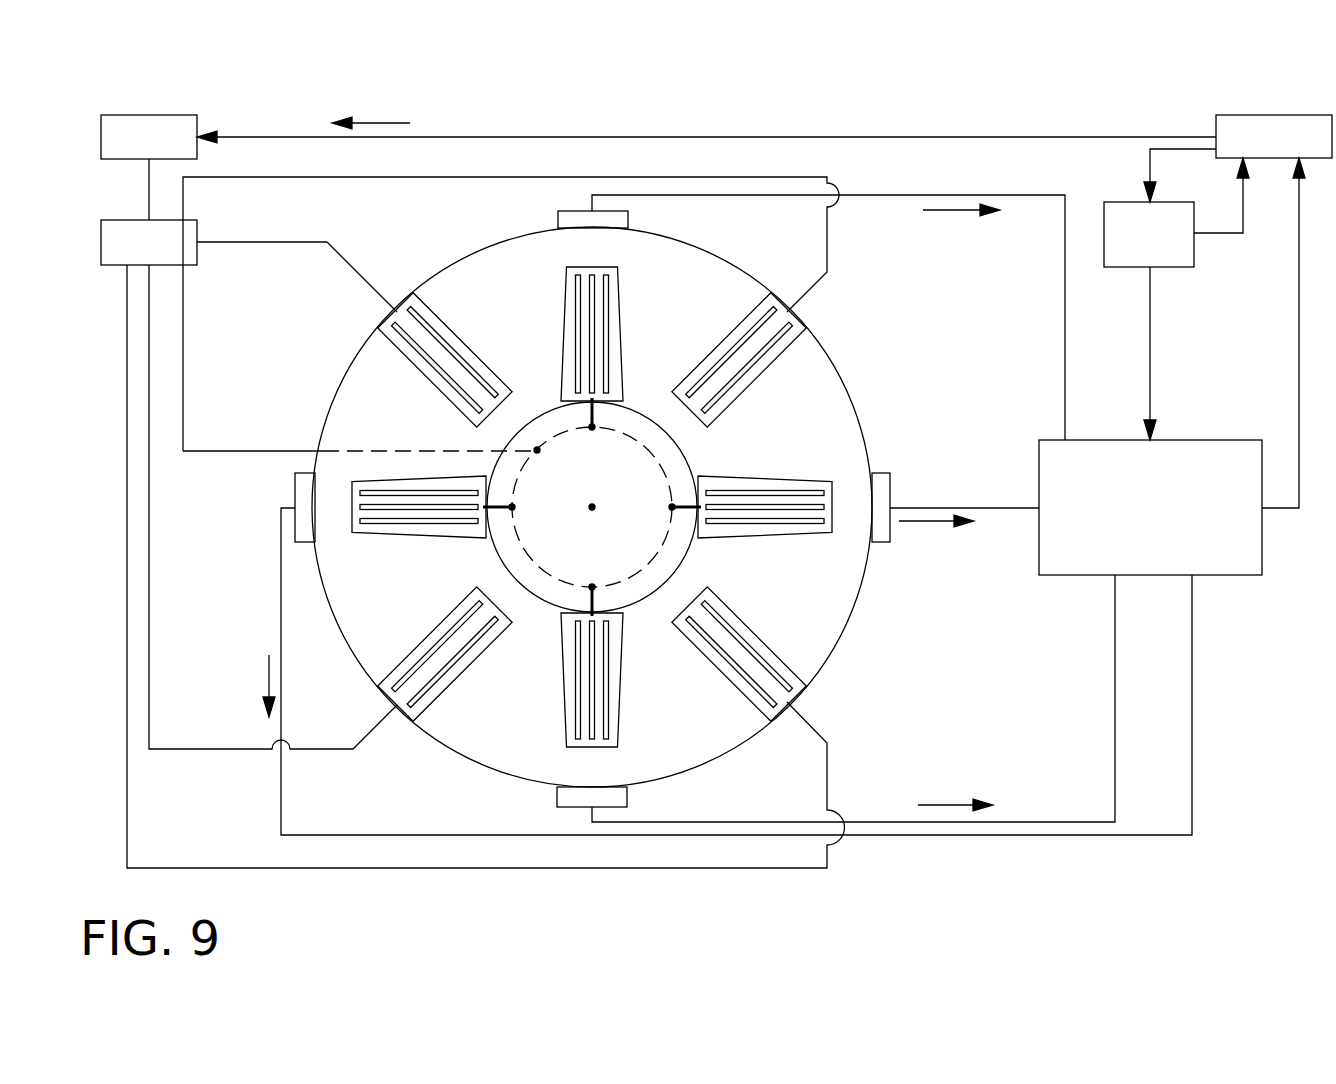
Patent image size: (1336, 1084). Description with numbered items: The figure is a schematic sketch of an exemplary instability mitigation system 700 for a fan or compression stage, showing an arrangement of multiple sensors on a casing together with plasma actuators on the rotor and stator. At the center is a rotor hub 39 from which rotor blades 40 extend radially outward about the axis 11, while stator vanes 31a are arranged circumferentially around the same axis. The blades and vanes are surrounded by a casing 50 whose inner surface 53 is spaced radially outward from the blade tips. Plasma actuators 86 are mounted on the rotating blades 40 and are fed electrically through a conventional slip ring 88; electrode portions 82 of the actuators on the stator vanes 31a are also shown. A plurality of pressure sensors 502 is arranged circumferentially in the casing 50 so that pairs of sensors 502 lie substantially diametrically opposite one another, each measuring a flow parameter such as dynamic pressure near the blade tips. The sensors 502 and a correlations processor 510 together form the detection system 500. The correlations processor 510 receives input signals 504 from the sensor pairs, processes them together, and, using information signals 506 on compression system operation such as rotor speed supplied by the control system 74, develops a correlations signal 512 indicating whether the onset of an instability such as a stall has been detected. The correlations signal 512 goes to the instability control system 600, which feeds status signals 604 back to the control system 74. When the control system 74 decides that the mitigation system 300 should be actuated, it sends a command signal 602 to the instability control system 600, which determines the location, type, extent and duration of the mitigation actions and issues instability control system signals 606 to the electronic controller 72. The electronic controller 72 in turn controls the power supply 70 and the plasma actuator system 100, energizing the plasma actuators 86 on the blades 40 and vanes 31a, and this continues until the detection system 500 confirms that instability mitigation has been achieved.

The rotational axis 11 is at (604, 500).
The stator vane 31a is at (454, 322).
The rotor hub 39 is at (693, 554).
The rotor blade 40 is at (624, 335).
The casing 50 is at (862, 600).
The inner surface of the casing 53 is at (348, 398).
The power supply 70 is at (167, 256).
The electronic controller 72 is at (167, 151).
The control system 74 is at (1167, 249).
The electrode slot 82 is at (456, 356).
The plasma actuator 86 is at (606, 290).
The slip ring 88 is at (563, 455).
The plasma actuator system 100 is at (120, 433).
The mitigation system 300 is at (155, 94).
The detection system 500 is at (1236, 638).
The sensor 502 is at (570, 220).
The input signal 504 is at (952, 212).
The information signal 506 is at (1152, 320).
The correlations processor 510 is at (1177, 519).
The correlations signal 512 is at (1297, 384).
The instability control system 600 is at (1300, 151).
The command signal 602 is at (1210, 236).
The status signal 604 is at (1148, 166).
The instability control system signal 606 is at (380, 120).
The instability mitigation system 700 is at (1132, 98).